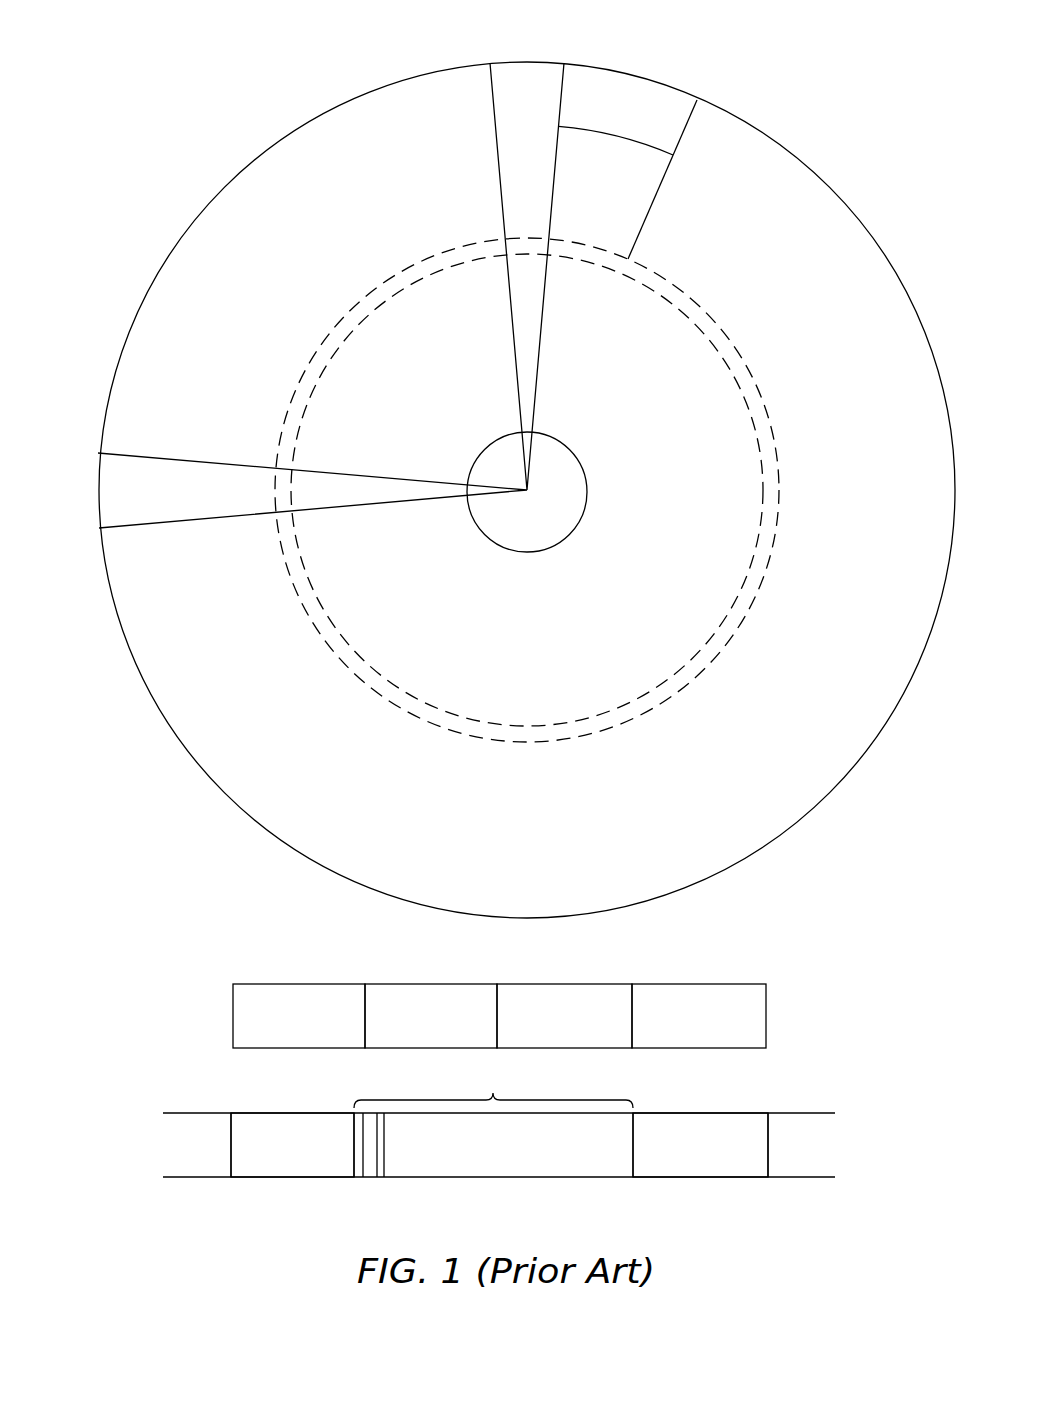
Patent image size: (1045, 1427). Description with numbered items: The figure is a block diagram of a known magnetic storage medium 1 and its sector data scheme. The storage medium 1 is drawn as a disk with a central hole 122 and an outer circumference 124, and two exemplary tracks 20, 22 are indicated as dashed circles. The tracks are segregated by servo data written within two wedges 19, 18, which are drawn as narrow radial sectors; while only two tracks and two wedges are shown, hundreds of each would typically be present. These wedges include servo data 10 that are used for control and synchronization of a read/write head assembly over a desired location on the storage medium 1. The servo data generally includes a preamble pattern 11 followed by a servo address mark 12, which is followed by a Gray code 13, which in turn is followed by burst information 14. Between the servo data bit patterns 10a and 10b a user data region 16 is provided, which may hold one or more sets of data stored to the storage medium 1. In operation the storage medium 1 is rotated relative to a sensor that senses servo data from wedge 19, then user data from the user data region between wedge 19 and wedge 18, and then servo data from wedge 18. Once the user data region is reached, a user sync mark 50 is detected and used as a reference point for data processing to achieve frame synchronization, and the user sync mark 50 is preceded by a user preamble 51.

The storage medium 1 is at (504, 464).
The servo data 10 is at (500, 1075).
The servo data bit pattern 10a is at (275, 1171).
The servo data bit pattern 10b is at (683, 1171).
The preamble pattern 11 is at (285, 1040).
The servo address mark 12 is at (419, 1040).
The Gray code 13 is at (553, 1040).
The burst information 14 is at (687, 1040).
The user data region 16 is at (590, 1077).
The wedge 18 is at (552, 63).
The wedge 19 is at (98, 470).
The track 20 is at (742, 393).
The track 22 is at (775, 437).
The user sync mark 50 is at (381, 1186).
The user preamble 51 is at (368, 1186).
The center hole 122 is at (587, 492).
The outer circumference 124 is at (807, 168).